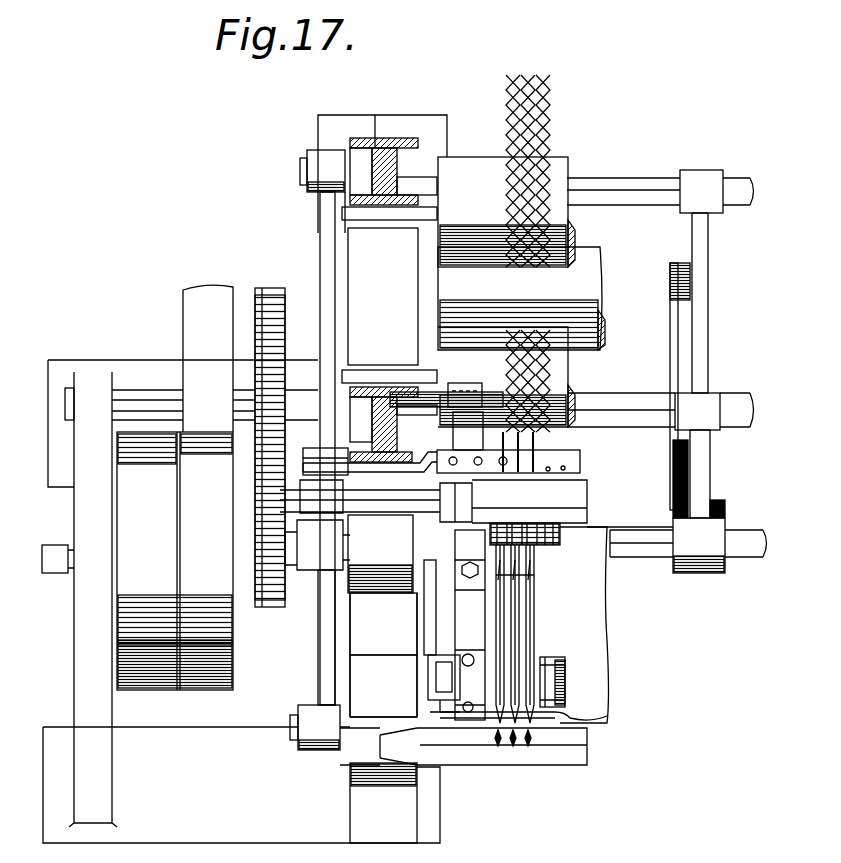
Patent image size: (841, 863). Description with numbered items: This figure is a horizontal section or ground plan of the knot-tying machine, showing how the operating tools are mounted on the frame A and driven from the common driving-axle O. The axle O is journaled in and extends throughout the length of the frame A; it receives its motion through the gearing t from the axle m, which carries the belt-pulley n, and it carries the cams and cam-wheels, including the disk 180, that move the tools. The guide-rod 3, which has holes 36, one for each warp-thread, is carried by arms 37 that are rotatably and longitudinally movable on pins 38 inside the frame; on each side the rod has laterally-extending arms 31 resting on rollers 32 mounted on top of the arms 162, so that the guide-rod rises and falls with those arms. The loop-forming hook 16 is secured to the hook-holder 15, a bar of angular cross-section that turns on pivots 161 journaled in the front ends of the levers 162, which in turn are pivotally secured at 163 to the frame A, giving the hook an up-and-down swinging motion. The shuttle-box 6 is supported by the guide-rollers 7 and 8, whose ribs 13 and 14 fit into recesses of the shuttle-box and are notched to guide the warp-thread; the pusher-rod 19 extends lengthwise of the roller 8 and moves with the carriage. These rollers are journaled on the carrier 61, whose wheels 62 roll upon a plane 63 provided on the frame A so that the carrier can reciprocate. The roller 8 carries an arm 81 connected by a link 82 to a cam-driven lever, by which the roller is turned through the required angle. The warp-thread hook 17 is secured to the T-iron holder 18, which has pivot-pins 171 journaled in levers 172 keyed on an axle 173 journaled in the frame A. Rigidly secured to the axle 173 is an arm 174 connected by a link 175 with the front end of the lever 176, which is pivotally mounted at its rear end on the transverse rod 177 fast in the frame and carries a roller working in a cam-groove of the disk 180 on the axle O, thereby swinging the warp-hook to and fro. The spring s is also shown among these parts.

The frame A is at (374, 116).
The driving-axle O is at (65, 402).
The axle m is at (62, 578).
The belt-pulley n is at (170, 663).
The gearing t is at (270, 608).
The pivots 163 is at (300, 170).
The levers 162 is at (320, 265).
The pins 38 is at (440, 392).
The arms 37 is at (453, 440).
The rollers 32 is at (306, 462).
The laterally-extending arms 31 is at (372, 472).
The holes 36 is at (580, 462).
The guide-rod 3 is at (566, 458).
The hook-holder 15 is at (584, 490).
The loop-forming hook 16 is at (514, 528).
The shuttle-box guide-roller 7 is at (560, 535).
The shuttle-box 6 is at (534, 610).
The rib 13 is at (528, 548).
The spring s is at (533, 575).
The carrier 61 is at (606, 626).
The rib 14 is at (548, 657).
The shuttle-box guide-roller 8 is at (553, 700).
The pusher-rod 19 is at (600, 718).
The holder 18 is at (587, 748).
The warp-thread hook 17 is at (527, 752).
The link 82 is at (436, 652).
The arm 81 is at (448, 660).
The pivots 161 is at (362, 513).
The wheels 62 is at (372, 785).
The plane 63 is at (383, 686).
The levers 172 is at (318, 658).
The pivot-pins 171 is at (290, 727).
The transverse rod 177 is at (616, 185).
The lever 176 is at (700, 353).
The disk 180 is at (670, 353).
The arm 174 is at (708, 483).
The link 175 is at (714, 518).
The axle 173 is at (746, 560).